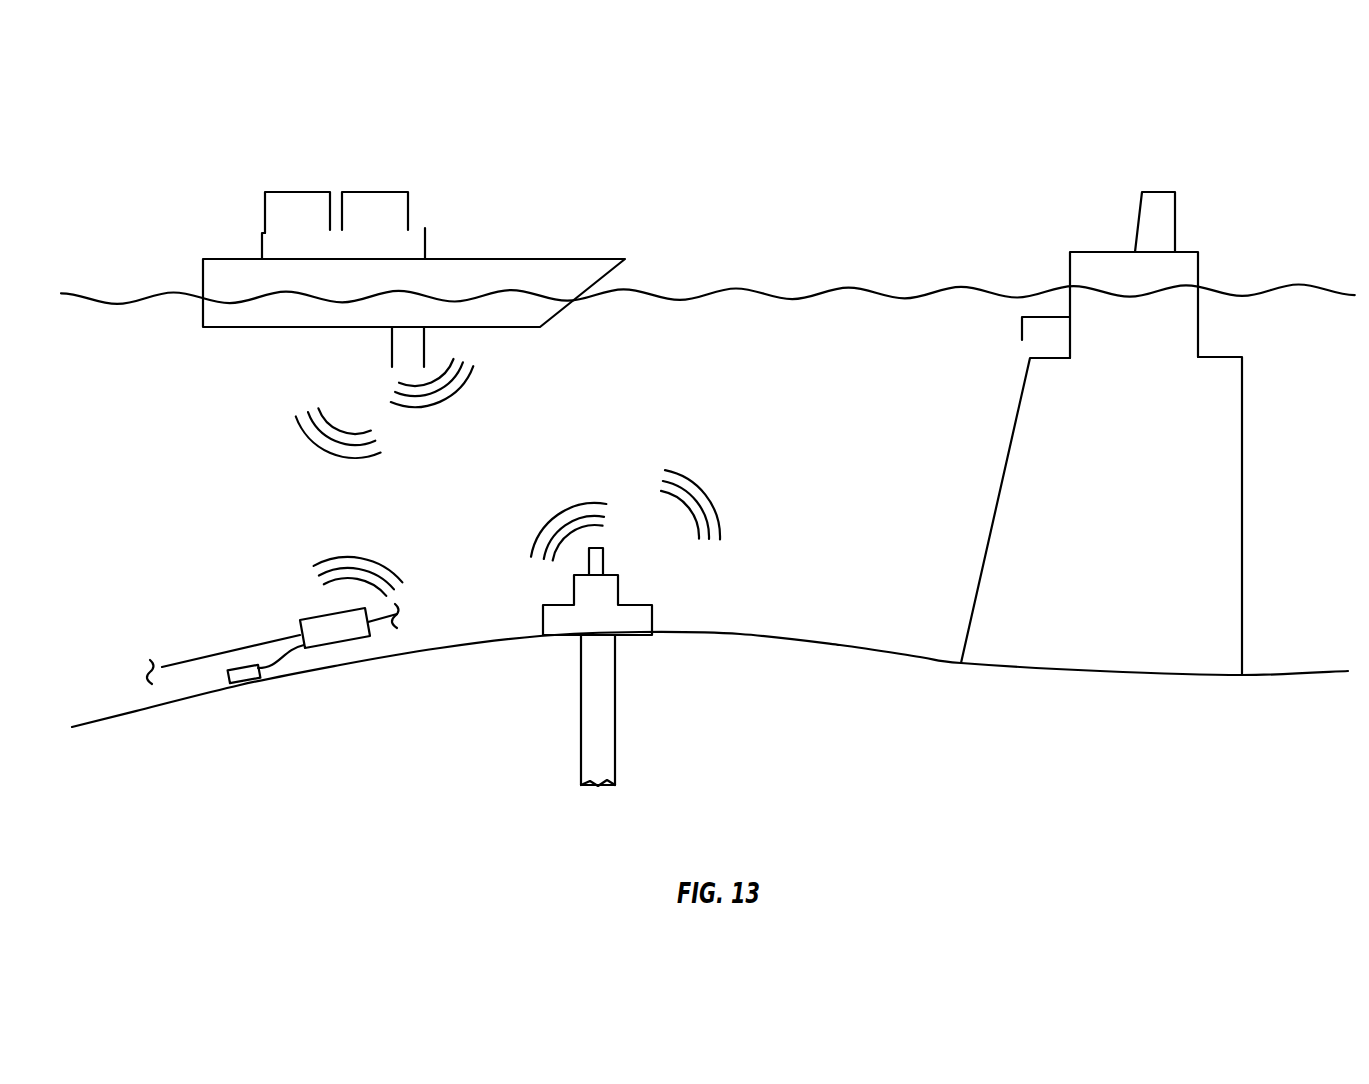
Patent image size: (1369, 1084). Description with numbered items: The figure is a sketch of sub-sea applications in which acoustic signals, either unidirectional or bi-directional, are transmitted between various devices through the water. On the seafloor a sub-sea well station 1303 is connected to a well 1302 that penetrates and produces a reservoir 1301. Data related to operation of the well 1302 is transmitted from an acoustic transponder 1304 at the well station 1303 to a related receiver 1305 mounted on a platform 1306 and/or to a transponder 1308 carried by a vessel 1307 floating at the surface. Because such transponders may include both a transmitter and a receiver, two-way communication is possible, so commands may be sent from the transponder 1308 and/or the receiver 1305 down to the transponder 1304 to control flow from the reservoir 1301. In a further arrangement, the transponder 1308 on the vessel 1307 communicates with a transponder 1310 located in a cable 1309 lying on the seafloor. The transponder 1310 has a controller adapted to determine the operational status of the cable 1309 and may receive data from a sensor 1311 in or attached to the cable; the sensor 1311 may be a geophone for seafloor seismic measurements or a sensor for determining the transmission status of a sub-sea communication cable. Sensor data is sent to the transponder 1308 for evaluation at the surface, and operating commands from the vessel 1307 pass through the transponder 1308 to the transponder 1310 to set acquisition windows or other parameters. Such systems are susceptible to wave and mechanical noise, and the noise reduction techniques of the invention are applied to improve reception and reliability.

The reservoir 1301 is at (382, 755).
The well 1302 is at (581, 697).
The sub-sea well station 1303 is at (653, 620).
The acoustic transponder 1304 is at (604, 560).
The receiver 1305 is at (1020, 332).
The platform 1306 is at (1199, 262).
The vessel 1307 is at (573, 258).
The transponder 1308 is at (392, 343).
The cable 1309 is at (160, 665).
The transponder 1310 is at (332, 611).
The sensor 1311 is at (243, 667).